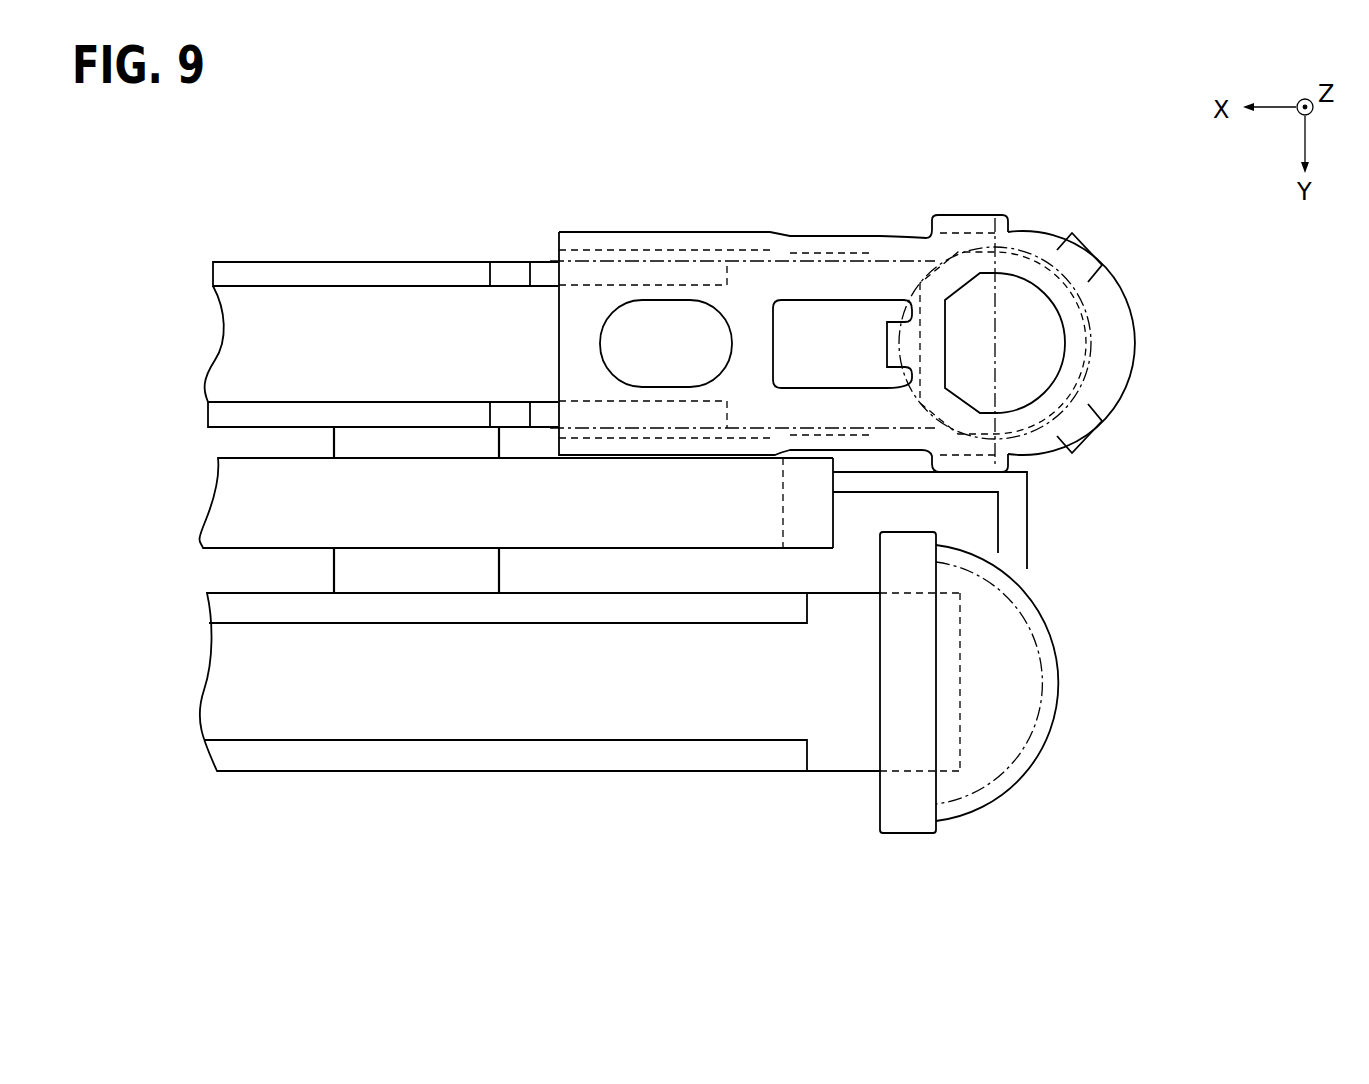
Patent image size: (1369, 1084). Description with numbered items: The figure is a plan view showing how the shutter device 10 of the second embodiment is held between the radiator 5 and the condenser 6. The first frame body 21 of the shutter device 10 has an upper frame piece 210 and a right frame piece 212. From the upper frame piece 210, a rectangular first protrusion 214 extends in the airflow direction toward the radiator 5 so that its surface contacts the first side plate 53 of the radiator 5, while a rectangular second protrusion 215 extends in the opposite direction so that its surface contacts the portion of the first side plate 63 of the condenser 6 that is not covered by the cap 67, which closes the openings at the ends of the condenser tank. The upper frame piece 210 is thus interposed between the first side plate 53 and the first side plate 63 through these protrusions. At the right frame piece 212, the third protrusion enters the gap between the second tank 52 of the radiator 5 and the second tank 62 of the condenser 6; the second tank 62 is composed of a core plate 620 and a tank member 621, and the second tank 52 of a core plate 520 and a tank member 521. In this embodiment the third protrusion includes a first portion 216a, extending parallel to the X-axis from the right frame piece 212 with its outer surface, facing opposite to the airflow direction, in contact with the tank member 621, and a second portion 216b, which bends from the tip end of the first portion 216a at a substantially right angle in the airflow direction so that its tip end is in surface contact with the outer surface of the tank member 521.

The shutter device 10 is at (265, 446).
The first frame body 21 is at (208, 442).
The upper frame piece 210 is at (313, 457).
The right frame piece 212 is at (783, 500).
The first protrusion 214 is at (502, 572).
The second protrusion 215 is at (507, 453).
The first portion 216a is at (957, 480).
The second portion 216b is at (1013, 538).
The first side plate 53 is at (733, 782).
The first side plate 63 is at (362, 252).
The cap 67 is at (726, 232).
The condenser 6 is at (1063, 206).
The second tank 62 is at (1042, 333).
The core plate 620 is at (935, 258).
The tank member 621 is at (1075, 430).
The radiator 5 is at (1012, 847).
The second tank 52 is at (964, 830).
The core plate 520 is at (912, 835).
The tank member 521 is at (1053, 773).